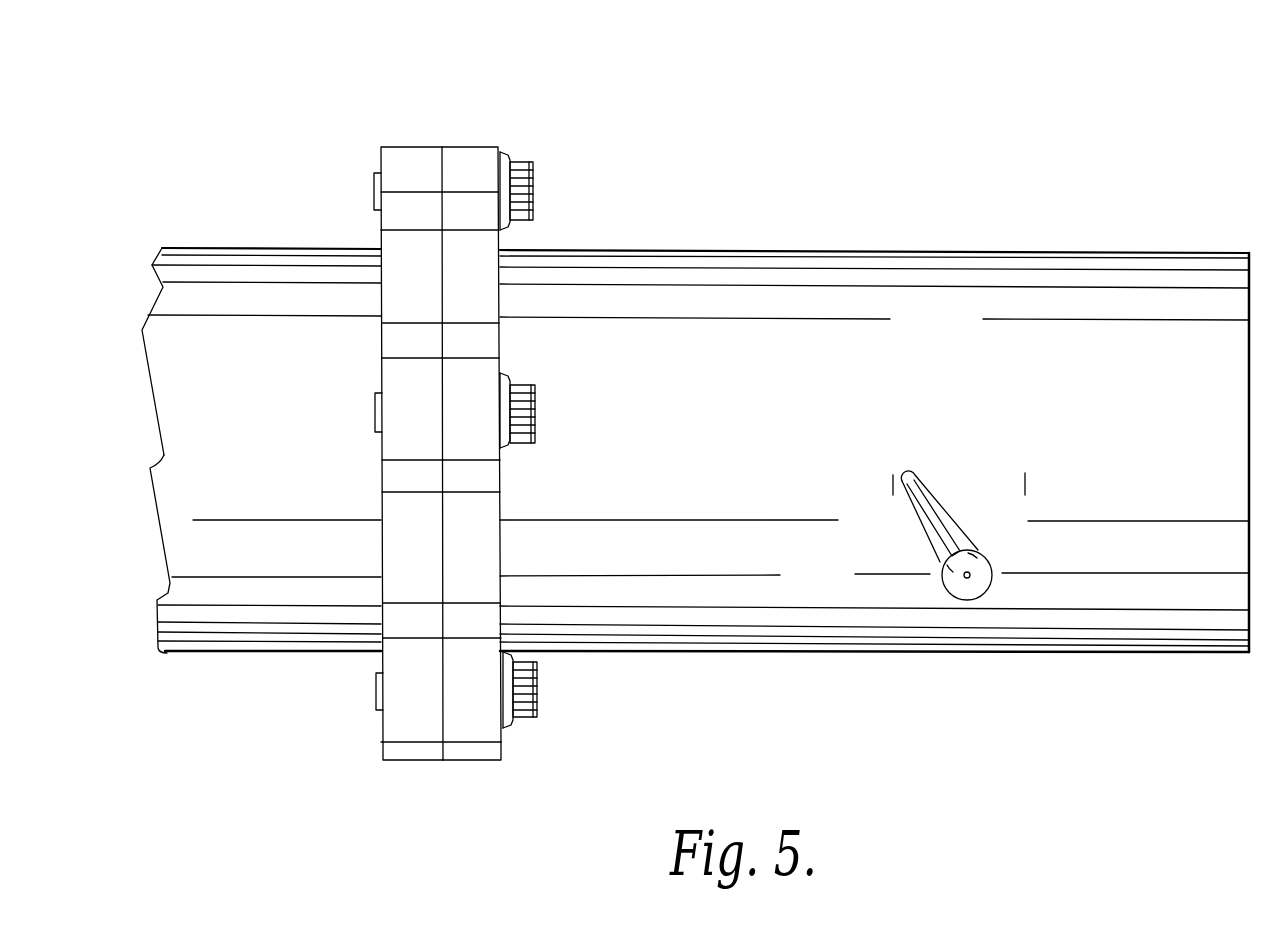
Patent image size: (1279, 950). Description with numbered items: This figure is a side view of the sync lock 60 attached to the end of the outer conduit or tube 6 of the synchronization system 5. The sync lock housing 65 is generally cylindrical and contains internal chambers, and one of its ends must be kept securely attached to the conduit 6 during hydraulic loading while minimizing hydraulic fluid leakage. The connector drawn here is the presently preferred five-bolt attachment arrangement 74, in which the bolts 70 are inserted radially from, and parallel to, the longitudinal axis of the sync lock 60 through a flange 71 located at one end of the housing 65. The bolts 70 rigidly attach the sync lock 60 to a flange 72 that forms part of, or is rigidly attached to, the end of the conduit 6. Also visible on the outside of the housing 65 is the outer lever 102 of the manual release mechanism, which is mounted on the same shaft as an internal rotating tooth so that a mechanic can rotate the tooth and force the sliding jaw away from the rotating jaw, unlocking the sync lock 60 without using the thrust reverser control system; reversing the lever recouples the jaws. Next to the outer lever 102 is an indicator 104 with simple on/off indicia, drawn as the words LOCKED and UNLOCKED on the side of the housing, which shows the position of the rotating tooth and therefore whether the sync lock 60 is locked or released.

The synchronization system 5 is at (236, 660).
The outer conduit or tube 6 is at (232, 268).
The sync lock 60 is at (882, 664).
The sync lock housing 65 is at (1108, 263).
The bolts 70 is at (528, 188).
The flange 71 is at (473, 733).
The flange 72 is at (413, 733).
The five-bolt attachment arrangement 74 is at (506, 93).
The outer lever 102 is at (933, 552).
The locked/unlocked indicia 104 is at (1073, 436).